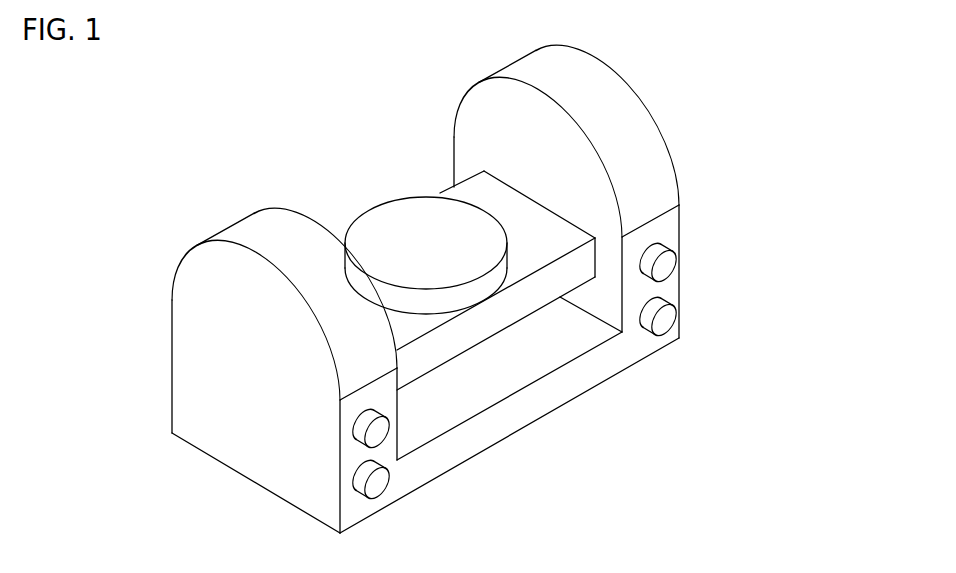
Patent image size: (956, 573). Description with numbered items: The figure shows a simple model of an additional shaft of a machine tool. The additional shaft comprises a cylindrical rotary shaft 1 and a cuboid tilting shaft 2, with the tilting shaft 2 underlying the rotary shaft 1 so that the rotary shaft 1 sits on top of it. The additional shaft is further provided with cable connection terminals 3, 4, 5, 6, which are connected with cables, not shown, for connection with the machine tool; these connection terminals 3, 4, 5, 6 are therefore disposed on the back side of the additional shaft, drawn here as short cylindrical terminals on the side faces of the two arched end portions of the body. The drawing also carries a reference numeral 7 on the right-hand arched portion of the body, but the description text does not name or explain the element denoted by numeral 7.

The rotary shaft 1 is at (398, 228).
The tilting shaft 2 is at (492, 197).
The cable connection terminal 3 is at (383, 430).
The cable connection terminal 4 is at (368, 482).
The cable connection terminal 5 is at (664, 268).
The cable connection terminal 6 is at (664, 322).
The arched support block 7 is at (657, 155).